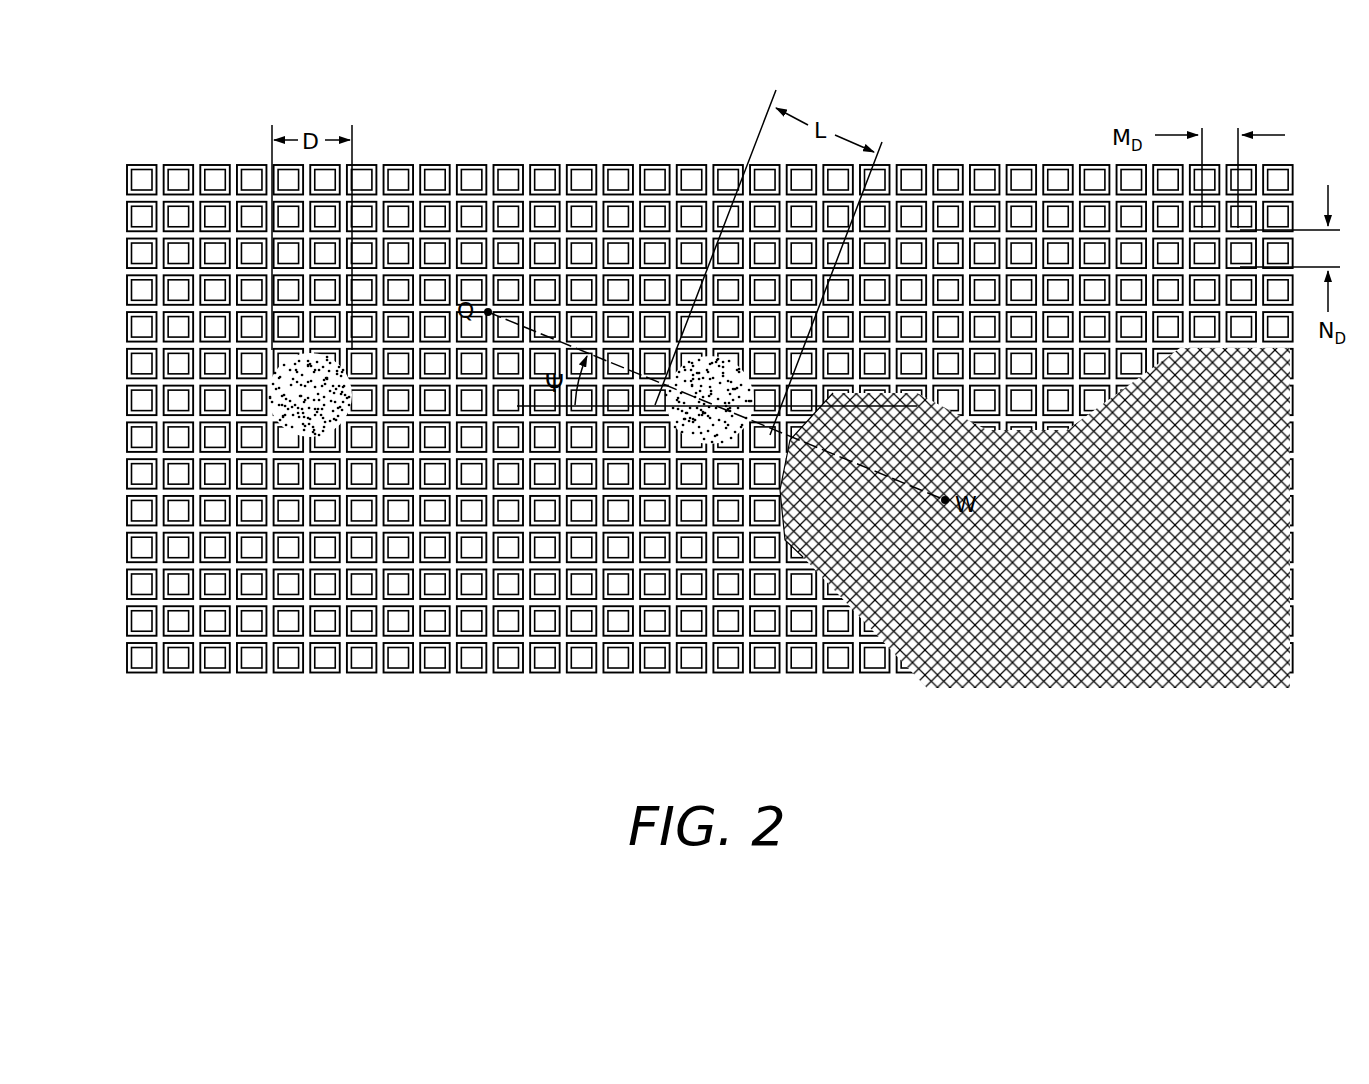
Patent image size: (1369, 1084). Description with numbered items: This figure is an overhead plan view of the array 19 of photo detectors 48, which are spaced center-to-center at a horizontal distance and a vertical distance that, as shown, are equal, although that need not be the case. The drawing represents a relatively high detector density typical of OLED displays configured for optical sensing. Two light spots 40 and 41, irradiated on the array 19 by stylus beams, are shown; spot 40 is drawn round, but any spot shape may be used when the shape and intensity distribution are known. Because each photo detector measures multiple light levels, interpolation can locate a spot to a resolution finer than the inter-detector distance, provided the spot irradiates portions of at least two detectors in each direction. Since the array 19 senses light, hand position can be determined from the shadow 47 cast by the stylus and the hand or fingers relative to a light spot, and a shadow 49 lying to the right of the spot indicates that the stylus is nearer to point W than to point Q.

The array 19 is at (107, 163).
The light spot 40 is at (290, 440).
The light spot 41 is at (690, 440).
The shadow 47 is at (807, 490).
The photo detectors 48 is at (582, 168).
The shadow 49 is at (1172, 588).